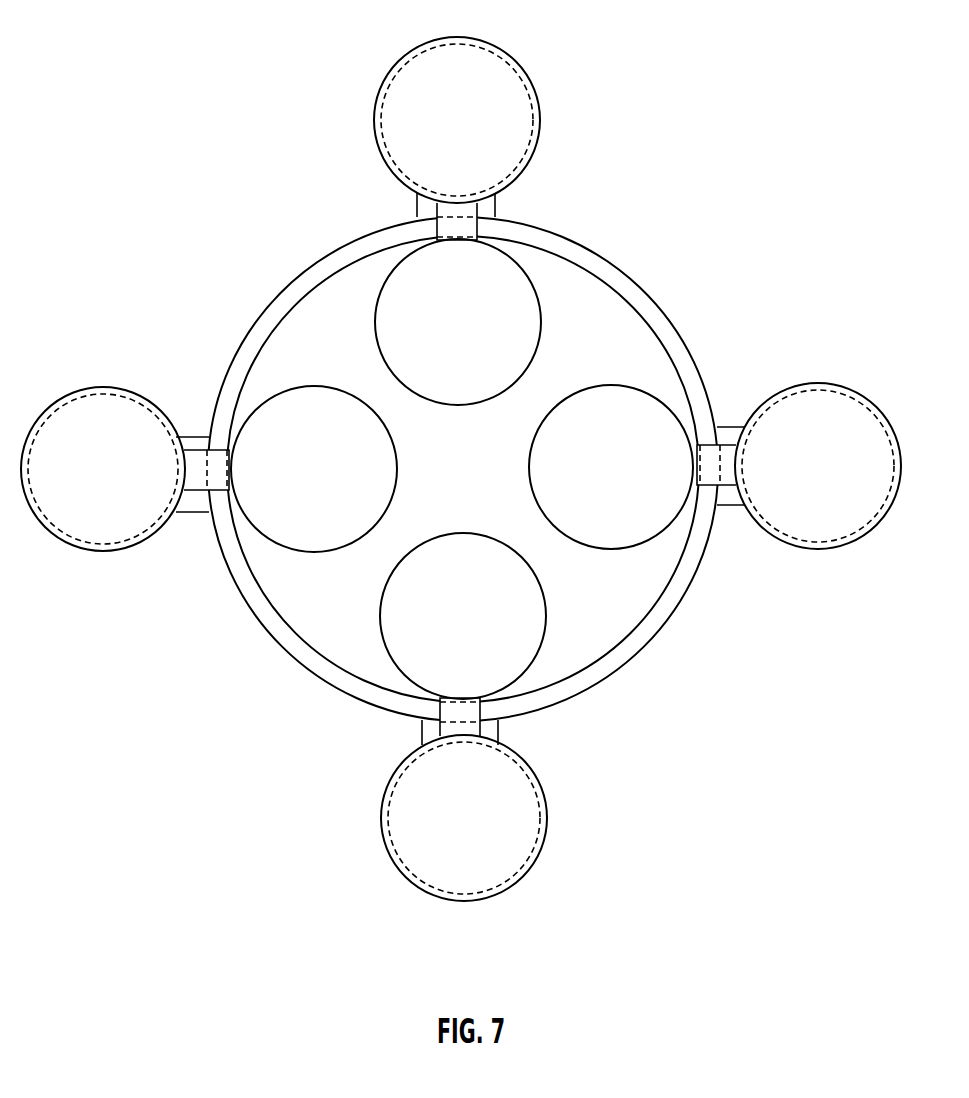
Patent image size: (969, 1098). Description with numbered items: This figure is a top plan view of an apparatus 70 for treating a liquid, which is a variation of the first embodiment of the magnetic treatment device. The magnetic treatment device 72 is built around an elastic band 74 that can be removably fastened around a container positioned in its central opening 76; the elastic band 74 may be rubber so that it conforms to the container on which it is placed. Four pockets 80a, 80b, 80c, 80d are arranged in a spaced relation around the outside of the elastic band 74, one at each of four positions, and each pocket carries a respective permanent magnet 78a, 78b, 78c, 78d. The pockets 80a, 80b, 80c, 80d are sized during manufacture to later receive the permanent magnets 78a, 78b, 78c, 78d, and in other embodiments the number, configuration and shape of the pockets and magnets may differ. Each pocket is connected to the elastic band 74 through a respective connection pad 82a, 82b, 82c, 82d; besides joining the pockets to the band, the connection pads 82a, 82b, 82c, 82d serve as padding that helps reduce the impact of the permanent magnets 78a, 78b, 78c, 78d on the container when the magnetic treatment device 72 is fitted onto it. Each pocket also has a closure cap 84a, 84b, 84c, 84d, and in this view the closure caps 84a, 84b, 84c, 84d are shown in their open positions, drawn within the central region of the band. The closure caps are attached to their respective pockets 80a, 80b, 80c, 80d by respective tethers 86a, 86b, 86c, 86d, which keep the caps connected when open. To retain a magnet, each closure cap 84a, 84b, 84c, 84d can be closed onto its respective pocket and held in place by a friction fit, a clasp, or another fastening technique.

The apparatus 70 is at (205, 136).
The magnetic treatment device 72 is at (644, 273).
The elastic band 74 is at (305, 265).
The central opening 76 is at (477, 481).
The permanent magnet 78a is at (513, 873).
The permanent magnet 78b is at (842, 535).
The permanent magnet 78c is at (94, 553).
The permanent magnet 78d is at (506, 64).
The pocket 80a is at (382, 845).
The pocket 80b is at (805, 385).
The pocket 80c is at (100, 390).
The pocket 80d is at (437, 36).
The connection pad 82a is at (500, 732).
The connection pad 82b is at (728, 506).
The connection pad 82c is at (205, 512).
The connection pad 82d is at (417, 207).
The closure cap 84a is at (548, 632).
The closure cap 84b is at (632, 545).
The closure cap 84c is at (298, 548).
The closure cap 84d is at (537, 290).
The tether 86a is at (420, 732).
The tether 86b is at (720, 427).
The tether 86c is at (192, 438).
The tether 86d is at (497, 212).